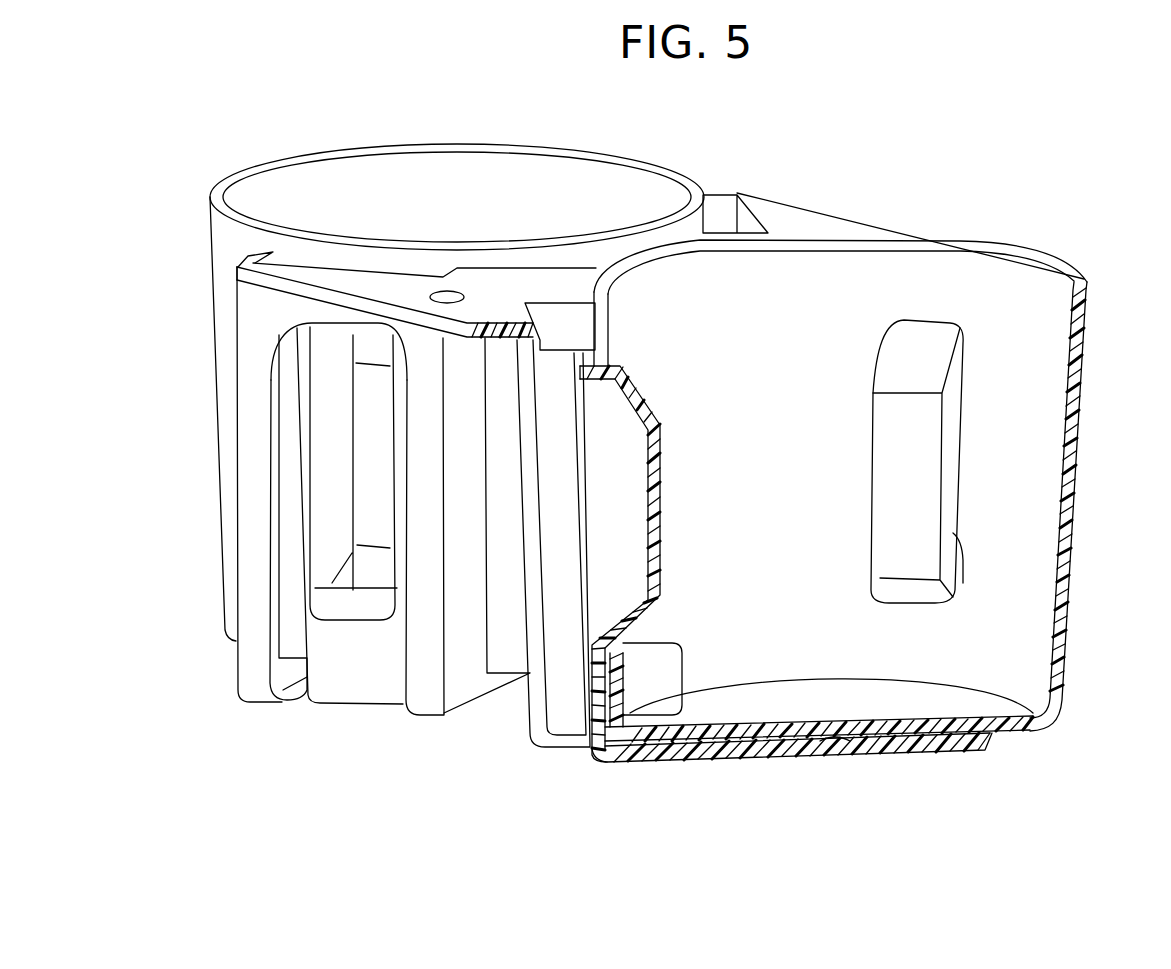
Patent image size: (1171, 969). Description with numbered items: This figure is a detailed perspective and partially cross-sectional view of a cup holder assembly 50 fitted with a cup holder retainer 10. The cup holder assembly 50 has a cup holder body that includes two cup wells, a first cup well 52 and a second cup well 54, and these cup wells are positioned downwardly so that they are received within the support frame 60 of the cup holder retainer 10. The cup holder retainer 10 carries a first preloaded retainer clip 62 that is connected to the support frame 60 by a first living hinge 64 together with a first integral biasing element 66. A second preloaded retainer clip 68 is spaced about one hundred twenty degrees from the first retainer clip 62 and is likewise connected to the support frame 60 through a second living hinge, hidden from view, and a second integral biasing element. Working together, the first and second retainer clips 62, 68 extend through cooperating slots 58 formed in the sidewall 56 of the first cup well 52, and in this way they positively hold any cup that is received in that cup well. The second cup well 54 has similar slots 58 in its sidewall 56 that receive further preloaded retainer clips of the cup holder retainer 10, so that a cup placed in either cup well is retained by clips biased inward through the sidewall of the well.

The cup holder retainer 10 is at (358, 762).
The cup holder assembly 50 is at (868, 202).
The first cup well 52 is at (1017, 255).
The second cup well 54 is at (362, 150).
The sidewall 56 is at (548, 197).
The slots 58 is at (299, 442).
The support frame 60 is at (250, 585).
The first preloaded retainer clip 62 is at (657, 520).
The first living hinge 64 is at (598, 758).
The first integral biasing element 66 is at (591, 345).
The second preloaded retainer clip 68 is at (919, 491).